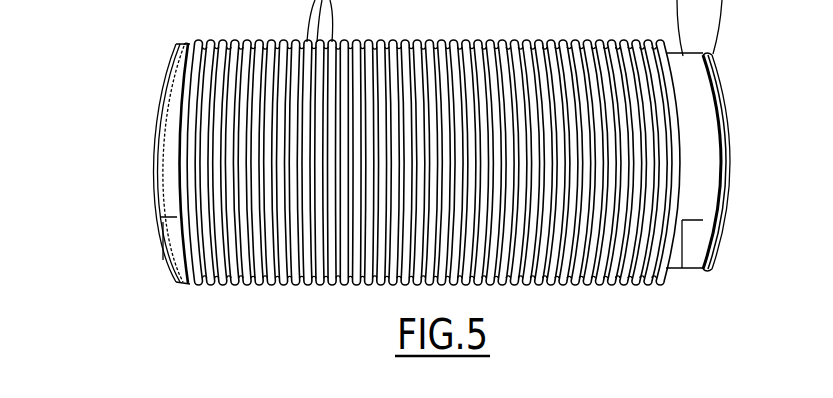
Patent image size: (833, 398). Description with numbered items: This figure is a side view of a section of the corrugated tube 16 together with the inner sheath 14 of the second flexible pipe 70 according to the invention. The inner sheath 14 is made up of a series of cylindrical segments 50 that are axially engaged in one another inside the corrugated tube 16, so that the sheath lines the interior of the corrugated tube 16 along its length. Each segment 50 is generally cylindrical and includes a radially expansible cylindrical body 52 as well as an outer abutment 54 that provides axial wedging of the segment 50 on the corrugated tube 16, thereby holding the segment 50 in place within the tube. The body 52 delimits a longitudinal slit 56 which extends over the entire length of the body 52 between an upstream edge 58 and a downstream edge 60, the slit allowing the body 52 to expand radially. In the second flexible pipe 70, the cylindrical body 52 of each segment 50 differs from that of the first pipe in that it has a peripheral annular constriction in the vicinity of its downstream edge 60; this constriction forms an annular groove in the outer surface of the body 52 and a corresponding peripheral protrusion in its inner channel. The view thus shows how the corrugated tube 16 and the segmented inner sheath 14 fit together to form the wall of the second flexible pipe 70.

The inner sheath 14 is at (454, 182).
The corrugated tube 16 is at (247, 304).
The cylindrical segment 50 is at (170, 115).
The cylindrical body 52 is at (173, 240).
The outer abutment 54 is at (178, 47).
The longitudinal slit 56 is at (693, 220).
The upstream edge 58 is at (160, 79).
The downstream edge 60 is at (730, 87).
The second flexible pipe 70 is at (618, 318).